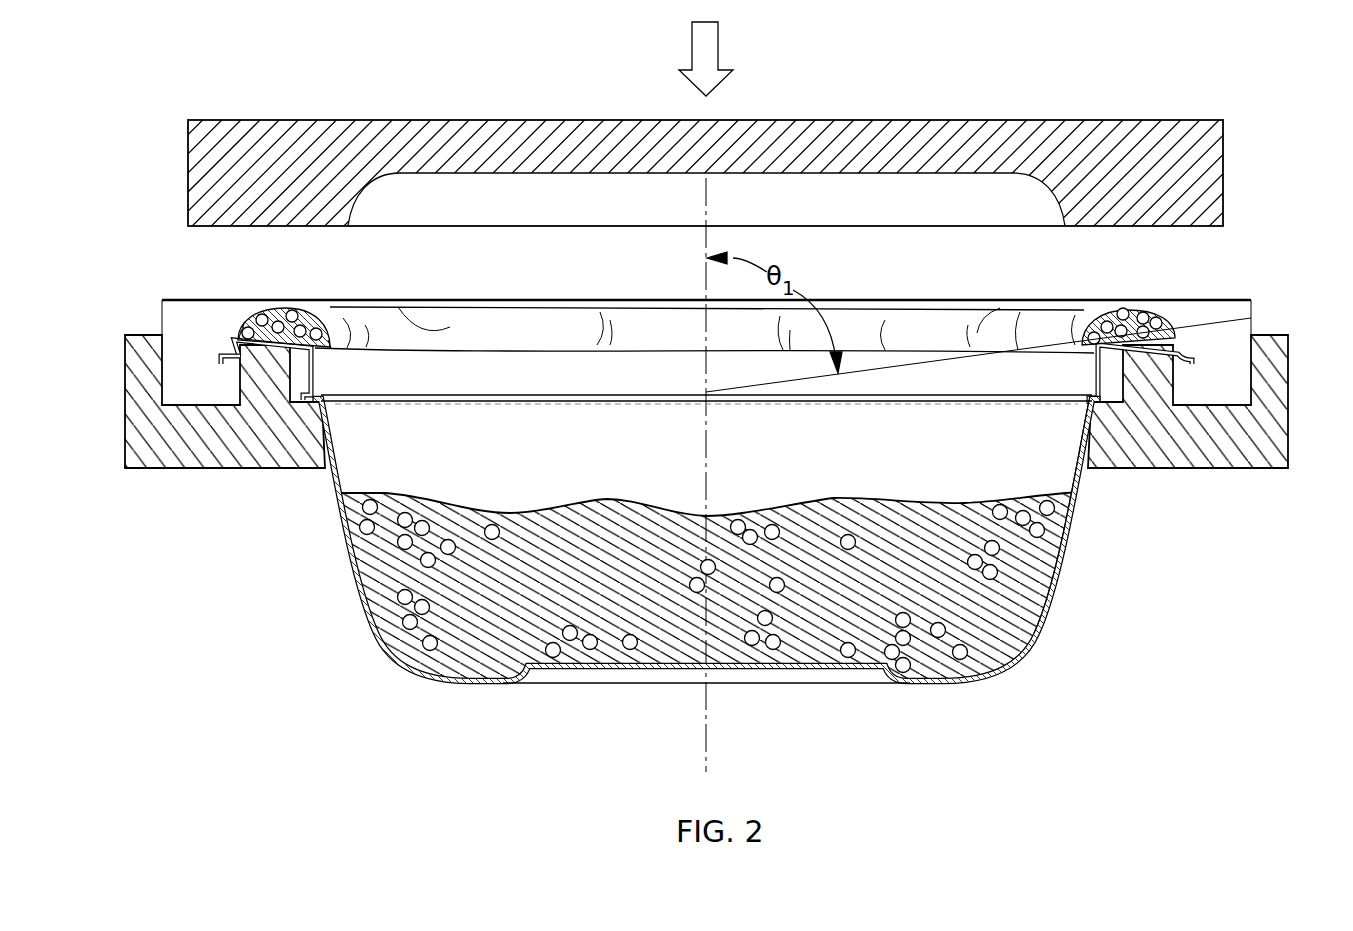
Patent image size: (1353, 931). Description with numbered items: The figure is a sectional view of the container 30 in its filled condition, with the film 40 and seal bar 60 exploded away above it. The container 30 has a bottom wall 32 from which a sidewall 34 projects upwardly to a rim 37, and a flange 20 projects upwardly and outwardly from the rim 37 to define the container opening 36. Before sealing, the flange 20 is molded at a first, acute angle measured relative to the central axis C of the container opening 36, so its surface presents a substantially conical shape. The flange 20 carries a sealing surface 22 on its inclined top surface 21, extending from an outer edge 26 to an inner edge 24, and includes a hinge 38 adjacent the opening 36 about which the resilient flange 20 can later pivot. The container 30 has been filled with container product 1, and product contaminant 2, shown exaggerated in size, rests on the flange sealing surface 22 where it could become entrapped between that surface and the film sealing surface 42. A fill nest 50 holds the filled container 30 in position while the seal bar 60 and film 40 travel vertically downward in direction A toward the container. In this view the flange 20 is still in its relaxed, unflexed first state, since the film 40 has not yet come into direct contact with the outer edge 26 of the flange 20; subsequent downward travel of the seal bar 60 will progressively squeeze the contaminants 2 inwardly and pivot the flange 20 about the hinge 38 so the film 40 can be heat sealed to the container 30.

The container product 1 is at (1010, 609).
The product contaminant 2 is at (1147, 311).
The flange 20 is at (217, 373).
The top surface 21 is at (249, 321).
The sealing surface 22 is at (278, 313).
The inner edge 24 is at (330, 343).
The outer edge 26 is at (233, 335).
The container 30 is at (352, 625).
The bottom wall 32 is at (818, 668).
The sidewall 34 is at (1067, 538).
The container opening 36 is at (582, 432).
The rim 37 is at (1082, 380).
The hinge 38 is at (1060, 363).
The film 40 is at (170, 296).
The film sealing surface 42 is at (453, 330).
The fill nest 50 is at (1296, 415).
The seal bar 60 is at (1240, 170).
The direction A is at (710, 53).
The central axis C is at (706, 718).